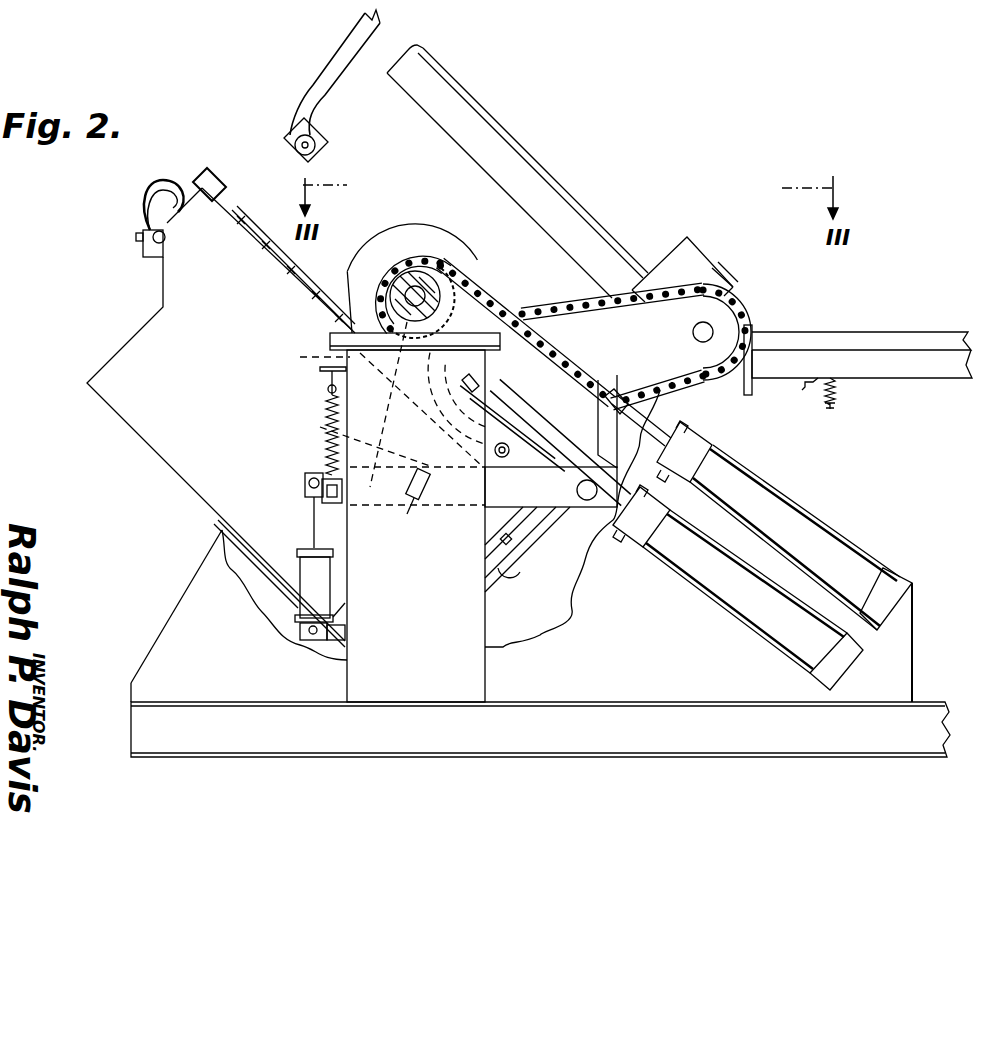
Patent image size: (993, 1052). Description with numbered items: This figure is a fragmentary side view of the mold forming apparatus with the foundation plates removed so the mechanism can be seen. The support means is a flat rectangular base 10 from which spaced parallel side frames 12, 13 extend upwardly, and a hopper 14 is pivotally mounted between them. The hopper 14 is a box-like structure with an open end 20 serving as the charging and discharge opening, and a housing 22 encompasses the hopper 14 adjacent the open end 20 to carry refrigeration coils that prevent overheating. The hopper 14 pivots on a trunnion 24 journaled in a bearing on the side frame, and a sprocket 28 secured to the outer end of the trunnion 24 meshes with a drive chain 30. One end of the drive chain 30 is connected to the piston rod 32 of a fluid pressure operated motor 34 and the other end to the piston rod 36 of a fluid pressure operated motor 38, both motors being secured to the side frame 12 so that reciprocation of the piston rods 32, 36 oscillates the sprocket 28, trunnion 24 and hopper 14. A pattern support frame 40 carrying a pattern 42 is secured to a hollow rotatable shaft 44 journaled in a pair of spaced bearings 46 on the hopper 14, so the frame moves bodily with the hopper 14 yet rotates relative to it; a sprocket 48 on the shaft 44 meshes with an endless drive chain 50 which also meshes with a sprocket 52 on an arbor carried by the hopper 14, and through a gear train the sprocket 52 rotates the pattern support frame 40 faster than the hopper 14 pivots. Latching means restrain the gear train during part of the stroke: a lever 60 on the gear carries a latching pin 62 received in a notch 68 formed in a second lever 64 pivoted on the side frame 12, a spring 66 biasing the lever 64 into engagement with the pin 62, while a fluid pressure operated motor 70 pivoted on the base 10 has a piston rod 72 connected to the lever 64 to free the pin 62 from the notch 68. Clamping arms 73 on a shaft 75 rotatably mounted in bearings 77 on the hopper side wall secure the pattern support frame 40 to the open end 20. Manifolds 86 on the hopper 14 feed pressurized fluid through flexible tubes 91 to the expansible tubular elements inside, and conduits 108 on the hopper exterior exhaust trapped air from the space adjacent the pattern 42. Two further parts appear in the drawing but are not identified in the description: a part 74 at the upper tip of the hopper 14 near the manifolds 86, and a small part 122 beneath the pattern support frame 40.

The base 10 is at (447, 742).
The side frame 12 is at (182, 600).
The side frame 13 is at (224, 547).
The hopper 14 is at (147, 330).
The open end 20 is at (497, 112).
The housing 22 is at (440, 84).
The trunnion 24 is at (377, 280).
The sprocket 28 is at (458, 282).
The drive chain 30 is at (395, 250).
The piston rod 32 is at (660, 430).
The fluid pressure operated motor 34 is at (695, 450).
The piston rod 36 is at (568, 455).
The fluid pressure operated motor 38 is at (638, 530).
The pattern support frame 40 is at (906, 364).
The pattern 42 is at (836, 334).
The hollow rotatable shaft 44 is at (695, 318).
The bearings 46 is at (718, 283).
The sprocket 48 is at (727, 328).
The endless drive chain 50 is at (742, 308).
The sprocket 52 is at (513, 340).
The lever 60 is at (305, 353).
The latching pin 62 is at (432, 482).
The second lever 64 is at (322, 468).
The spring 66 is at (322, 406).
The notch 68 is at (409, 519).
The fluid pressure operated motor 70 is at (302, 572).
The piston rod 72 is at (310, 513).
The clamping arms 73 is at (360, 24).
The plate tip 74 is at (193, 196).
The shaft 75 is at (294, 142).
The bearings 77 is at (293, 150).
The manifolds 86 is at (157, 258).
The flexible tubes 91 is at (146, 197).
The conduits 108 is at (540, 524).
The spring bolt 122 is at (828, 399).